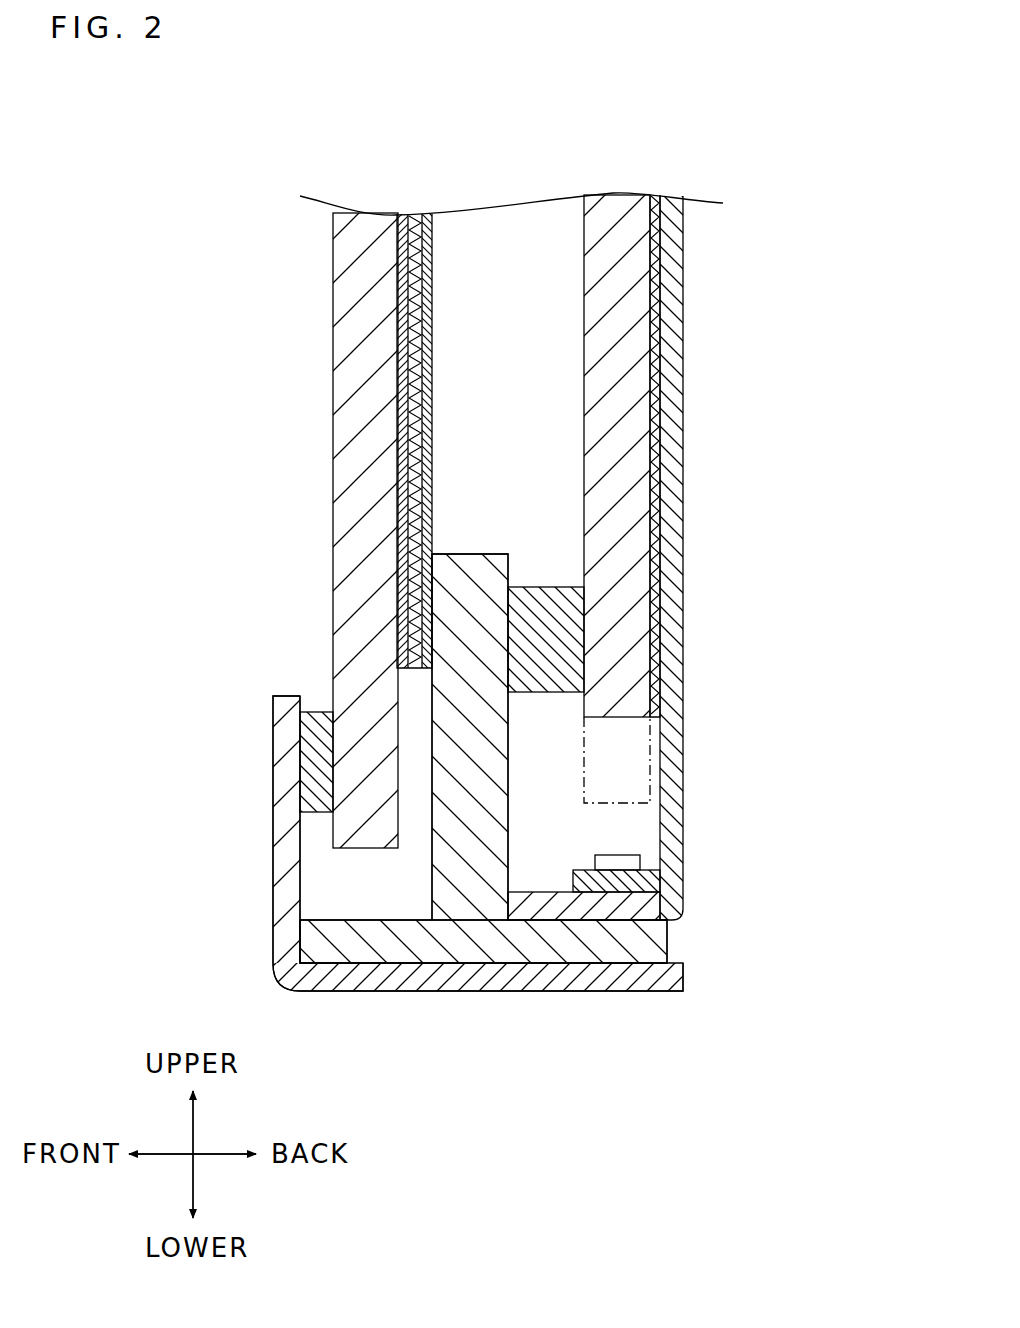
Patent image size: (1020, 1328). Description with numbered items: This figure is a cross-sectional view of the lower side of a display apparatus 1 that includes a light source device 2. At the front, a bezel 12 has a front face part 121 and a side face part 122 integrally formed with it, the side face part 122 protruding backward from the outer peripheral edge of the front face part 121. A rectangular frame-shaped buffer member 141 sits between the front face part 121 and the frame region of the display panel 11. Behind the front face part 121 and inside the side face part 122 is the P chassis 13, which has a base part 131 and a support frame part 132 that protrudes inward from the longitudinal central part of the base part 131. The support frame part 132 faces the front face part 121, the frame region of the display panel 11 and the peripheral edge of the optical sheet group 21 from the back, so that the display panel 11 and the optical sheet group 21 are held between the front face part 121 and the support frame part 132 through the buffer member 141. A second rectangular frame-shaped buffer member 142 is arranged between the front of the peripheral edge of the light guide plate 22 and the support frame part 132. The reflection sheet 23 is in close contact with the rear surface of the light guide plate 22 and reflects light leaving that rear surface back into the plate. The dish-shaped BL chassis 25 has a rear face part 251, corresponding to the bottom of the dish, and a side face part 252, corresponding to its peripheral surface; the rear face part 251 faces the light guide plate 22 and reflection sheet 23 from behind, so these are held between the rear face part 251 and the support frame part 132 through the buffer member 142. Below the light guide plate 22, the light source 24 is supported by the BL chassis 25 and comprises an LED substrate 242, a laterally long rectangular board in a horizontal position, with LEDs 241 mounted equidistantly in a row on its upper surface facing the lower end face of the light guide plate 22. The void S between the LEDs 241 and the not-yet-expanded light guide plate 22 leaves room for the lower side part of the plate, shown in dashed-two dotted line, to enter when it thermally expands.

The display apparatus 1 is at (755, 108).
The light source device 2 is at (505, 189).
The display panel 11 is at (340, 343).
The bezel 12 is at (431, 896).
The front face part 121 is at (282, 875).
The side face part 122 is at (392, 980).
The P chassis 13 is at (433, 816).
The base part 131 is at (555, 940).
The support frame part 132 is at (442, 695).
The buffer member 141 is at (312, 760).
The buffer member 142 is at (556, 598).
The optical sheet group 21 is at (412, 216).
The light guide plate 22 is at (623, 597).
The reflection sheet 23 is at (657, 210).
The light source 24 is at (715, 819).
The LED 241 is at (622, 860).
The LED substrate 242 is at (679, 852).
The BL chassis 25 is at (640, 661).
The rear face part 251 is at (678, 848).
The side face part 252 is at (637, 910).
The void S is at (630, 768).